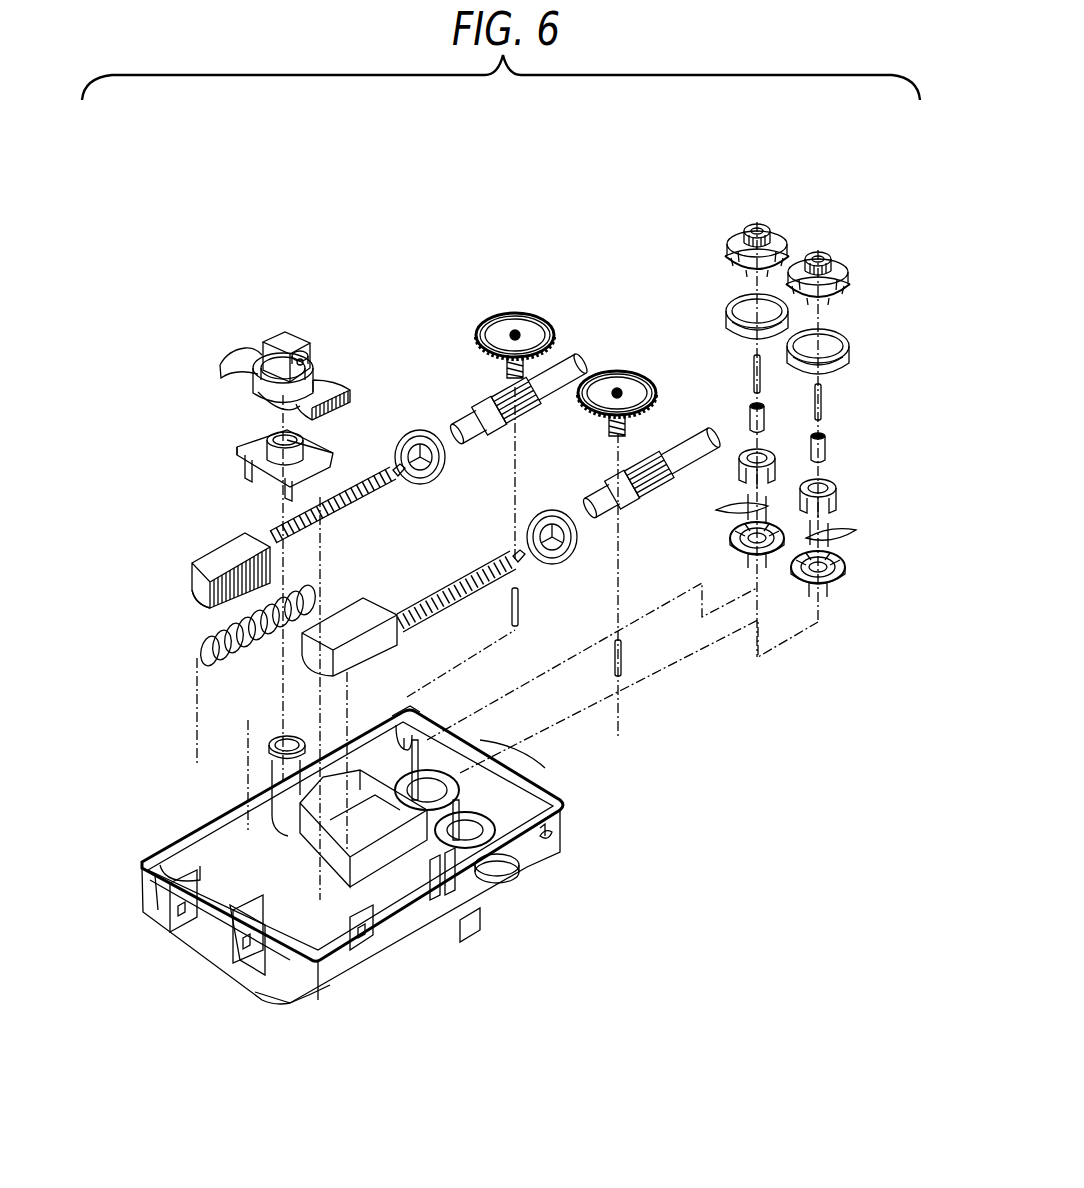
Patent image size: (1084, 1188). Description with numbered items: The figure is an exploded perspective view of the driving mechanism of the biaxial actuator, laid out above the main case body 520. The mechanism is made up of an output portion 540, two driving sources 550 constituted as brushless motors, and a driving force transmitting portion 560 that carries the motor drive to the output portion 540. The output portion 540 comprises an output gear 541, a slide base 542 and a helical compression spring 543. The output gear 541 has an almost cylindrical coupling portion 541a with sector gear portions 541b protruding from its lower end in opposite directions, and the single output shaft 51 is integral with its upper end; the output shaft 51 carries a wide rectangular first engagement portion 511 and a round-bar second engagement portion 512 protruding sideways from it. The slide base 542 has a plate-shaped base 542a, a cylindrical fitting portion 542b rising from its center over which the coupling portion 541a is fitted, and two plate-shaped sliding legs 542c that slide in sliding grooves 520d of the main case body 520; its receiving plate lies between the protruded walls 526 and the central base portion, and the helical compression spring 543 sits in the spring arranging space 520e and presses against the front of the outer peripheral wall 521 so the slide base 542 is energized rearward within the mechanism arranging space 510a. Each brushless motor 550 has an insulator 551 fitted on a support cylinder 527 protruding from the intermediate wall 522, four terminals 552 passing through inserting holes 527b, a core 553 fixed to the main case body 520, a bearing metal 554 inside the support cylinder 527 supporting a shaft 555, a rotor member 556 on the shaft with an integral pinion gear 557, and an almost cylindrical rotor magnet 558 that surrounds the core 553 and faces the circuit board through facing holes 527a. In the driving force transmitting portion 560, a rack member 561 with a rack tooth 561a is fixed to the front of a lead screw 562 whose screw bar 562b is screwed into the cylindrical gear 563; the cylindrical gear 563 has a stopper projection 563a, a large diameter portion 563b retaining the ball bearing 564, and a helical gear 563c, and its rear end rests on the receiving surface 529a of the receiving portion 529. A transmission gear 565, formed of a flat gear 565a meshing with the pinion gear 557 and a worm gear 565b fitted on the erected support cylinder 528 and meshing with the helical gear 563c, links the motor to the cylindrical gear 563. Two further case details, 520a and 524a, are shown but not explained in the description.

The output shaft 51 is at (288, 340).
The first engagement portion 511 is at (300, 350).
The second engagement portion 512 is at (273, 342).
The main case body 520 is at (367, 953).
The base wall 520a is at (207, 840).
The sliding grooves 520d is at (300, 948).
The spring arranging space 520e is at (277, 890).
The outer peripheral wall 521 is at (270, 975).
The intermediate wall 522 is at (530, 770).
The partition rib 524a is at (293, 873).
The protruded walls 526 is at (170, 897).
The support cylinder 527 is at (420, 758).
The facing holes 527a is at (467, 840).
The inserting holes 527b is at (455, 780).
The support cylinder 528 is at (510, 606).
The receiving portion 529 is at (385, 722).
The receiving surface 529a is at (380, 712).
The mechanism arranging space 510a is at (335, 735).
The output portion 540 is at (213, 305).
The output gear 541 is at (333, 370).
The coupling portion 541a is at (262, 398).
The sector gear portions 541b is at (238, 360).
The slide base 542 is at (243, 446).
The base 542a is at (240, 455).
The fitting portion 542b is at (305, 438).
The sliding legs 542c is at (248, 490).
The helical compression spring 543 is at (213, 652).
The driving source 550 is at (716, 210).
The insulator 551 is at (735, 468).
The terminals 552 is at (735, 512).
The core 553 is at (768, 560).
The bearing metal 554 is at (748, 418).
The shaft 555 is at (752, 372).
The rotor member 556 is at (775, 240).
The pinion gear 557 is at (757, 226).
The rotor magnet 558 is at (735, 305).
The driving force transmitting portion 560 is at (457, 300).
The rack member 561 is at (195, 568).
The rack tooth 561a is at (230, 598).
The lead screw 562 is at (355, 495).
The screw bar 562b is at (330, 520).
The cylindrical gear 563 is at (572, 365).
The stopper projection 563a is at (470, 447).
The large diameter portion 563b is at (490, 410).
The helical gear 563c is at (522, 415).
The ball bearing 564 is at (428, 482).
The transmission gear 565 is at (530, 322).
The flat gear 565a is at (510, 322).
The worm gear 565b is at (553, 322).